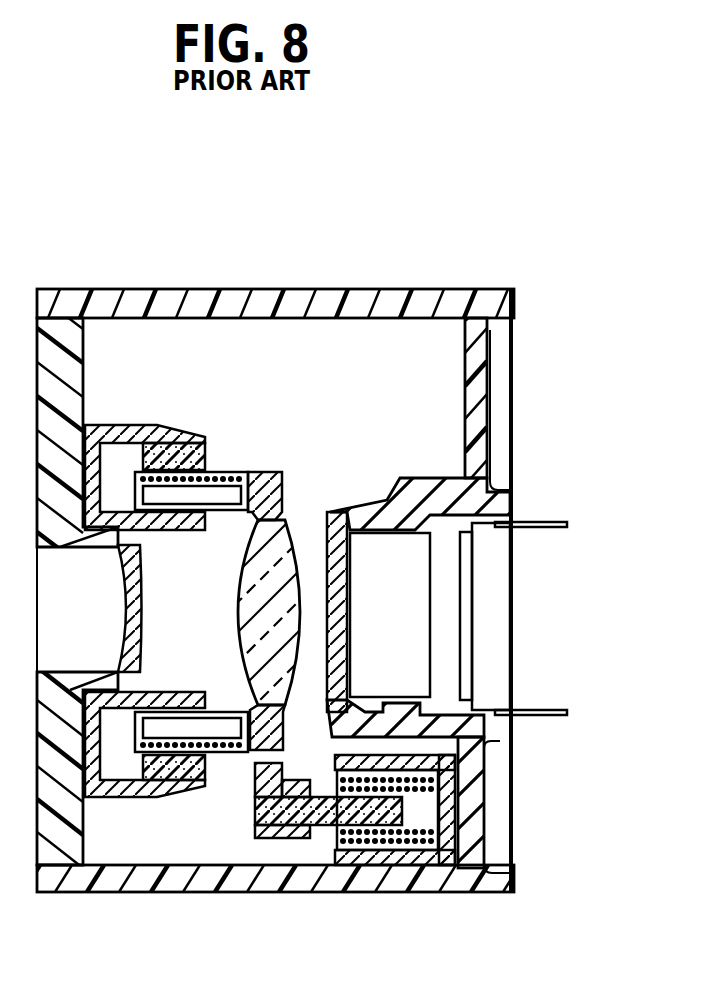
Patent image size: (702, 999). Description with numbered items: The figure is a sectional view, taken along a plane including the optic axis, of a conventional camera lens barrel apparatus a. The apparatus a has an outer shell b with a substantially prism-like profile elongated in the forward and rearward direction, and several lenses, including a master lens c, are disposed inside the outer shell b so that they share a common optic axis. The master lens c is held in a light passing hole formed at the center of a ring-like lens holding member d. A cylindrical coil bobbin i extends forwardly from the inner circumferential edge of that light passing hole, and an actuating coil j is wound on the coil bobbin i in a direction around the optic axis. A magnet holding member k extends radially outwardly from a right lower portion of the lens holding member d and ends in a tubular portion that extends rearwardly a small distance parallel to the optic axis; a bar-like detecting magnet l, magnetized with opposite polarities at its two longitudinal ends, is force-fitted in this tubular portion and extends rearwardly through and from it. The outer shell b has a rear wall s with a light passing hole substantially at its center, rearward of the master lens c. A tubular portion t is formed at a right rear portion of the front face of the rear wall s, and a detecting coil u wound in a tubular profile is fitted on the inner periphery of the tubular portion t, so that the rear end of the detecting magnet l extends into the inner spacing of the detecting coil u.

The lens barrel apparatus a is at (329, 262).
The outer shell b is at (375, 300).
The master lens c is at (255, 578).
The lens holding member d is at (268, 508).
The coil bobbin i is at (215, 700).
The actuating coil j is at (225, 750).
The magnet holding member k is at (280, 838).
The detecting magnet l is at (330, 830).
The rear wall s is at (478, 425).
The tubular portion t is at (412, 865).
The detecting coil u is at (385, 850).